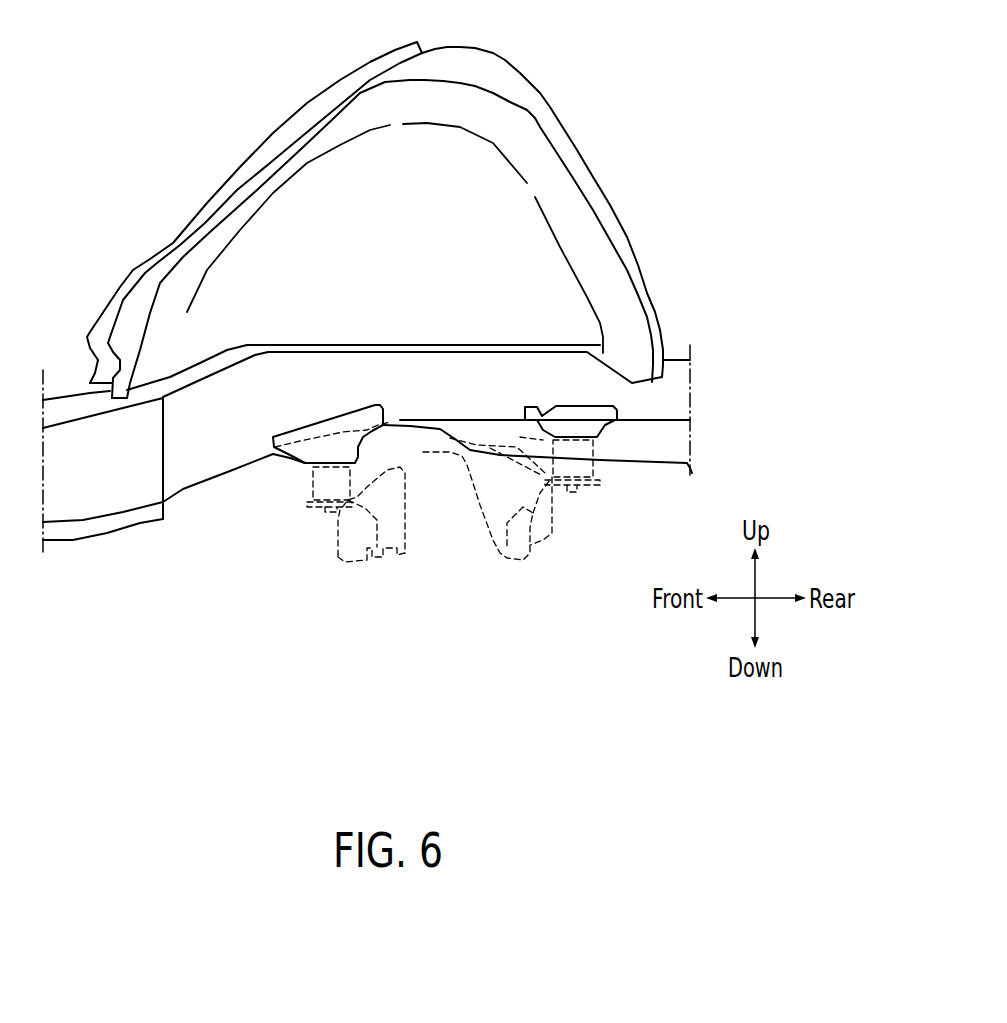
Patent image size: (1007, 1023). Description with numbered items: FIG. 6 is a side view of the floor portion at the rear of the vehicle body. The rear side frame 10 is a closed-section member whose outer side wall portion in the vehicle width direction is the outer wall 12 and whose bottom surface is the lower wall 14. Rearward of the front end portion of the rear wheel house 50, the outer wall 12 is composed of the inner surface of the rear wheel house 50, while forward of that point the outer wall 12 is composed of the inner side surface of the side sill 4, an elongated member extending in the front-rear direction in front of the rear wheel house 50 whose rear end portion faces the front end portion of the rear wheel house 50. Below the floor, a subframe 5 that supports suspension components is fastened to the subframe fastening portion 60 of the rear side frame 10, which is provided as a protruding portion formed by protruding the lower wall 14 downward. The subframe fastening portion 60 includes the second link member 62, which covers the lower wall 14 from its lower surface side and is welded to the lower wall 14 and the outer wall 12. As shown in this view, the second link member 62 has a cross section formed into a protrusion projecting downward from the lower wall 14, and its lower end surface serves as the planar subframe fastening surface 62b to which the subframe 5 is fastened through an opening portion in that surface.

The side sill 4 is at (105, 536).
The subframe 5 is at (452, 452).
The rear side frame 10 is at (183, 487).
The outer wall 12 is at (665, 396).
The lower wall 14 is at (643, 420).
The rear wheel house 50 is at (555, 122).
The subframe fastening portion 60 is at (366, 450).
The second link member 62 is at (288, 458).
The subframe fastening surface 62b is at (310, 463).